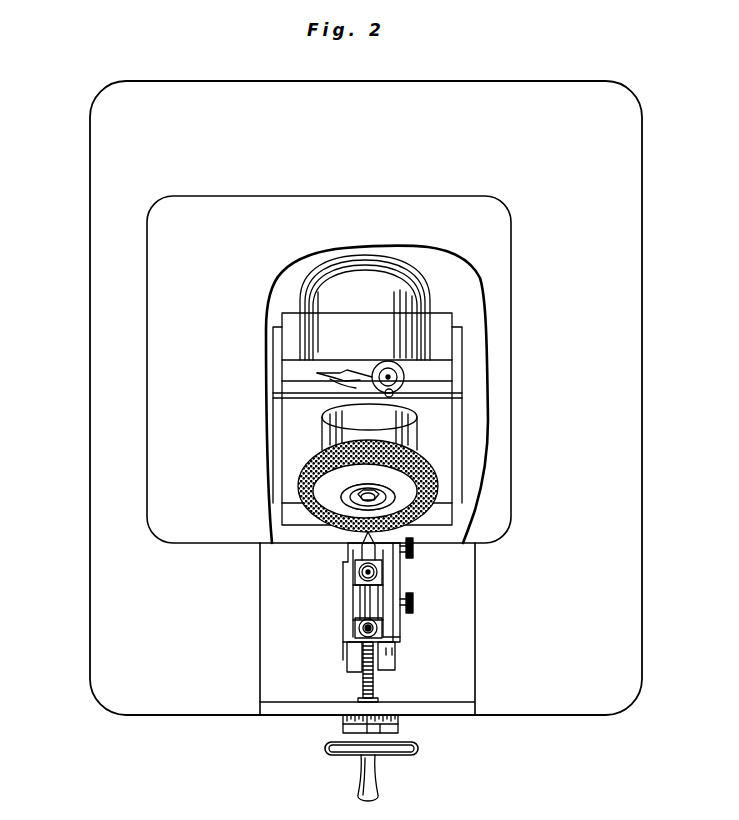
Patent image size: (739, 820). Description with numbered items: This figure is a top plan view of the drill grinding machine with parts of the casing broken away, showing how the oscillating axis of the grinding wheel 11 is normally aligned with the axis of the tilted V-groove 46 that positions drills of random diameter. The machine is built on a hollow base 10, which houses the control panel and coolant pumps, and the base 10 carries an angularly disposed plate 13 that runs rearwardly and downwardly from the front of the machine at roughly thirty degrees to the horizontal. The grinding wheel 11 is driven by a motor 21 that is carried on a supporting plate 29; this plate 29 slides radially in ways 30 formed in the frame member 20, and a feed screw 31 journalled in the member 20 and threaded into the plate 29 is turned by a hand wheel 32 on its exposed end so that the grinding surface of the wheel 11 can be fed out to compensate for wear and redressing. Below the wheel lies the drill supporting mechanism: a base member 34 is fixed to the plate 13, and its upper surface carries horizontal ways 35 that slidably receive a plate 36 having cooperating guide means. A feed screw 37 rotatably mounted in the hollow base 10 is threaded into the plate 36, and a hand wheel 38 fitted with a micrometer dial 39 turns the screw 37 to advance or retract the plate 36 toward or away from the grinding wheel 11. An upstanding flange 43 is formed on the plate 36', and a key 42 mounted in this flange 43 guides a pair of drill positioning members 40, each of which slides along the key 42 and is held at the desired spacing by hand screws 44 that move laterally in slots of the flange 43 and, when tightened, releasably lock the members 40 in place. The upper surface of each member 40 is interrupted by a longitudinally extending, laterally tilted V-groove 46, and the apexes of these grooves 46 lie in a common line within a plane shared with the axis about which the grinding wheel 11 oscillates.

The hollow base 10 is at (88, 415).
The grinding wheel 11 is at (410, 468).
The angularly disposed plate 13 is at (459, 278).
The frame member 20 is at (292, 438).
The motor 21 is at (357, 278).
The supporting plate 29 is at (352, 369).
The ways 30 is at (345, 385).
The feed screw 31 is at (397, 376).
The hand wheel 32 is at (395, 392).
The base member 34 is at (347, 654).
The ways 35 is at (394, 659).
The plate 36 is at (355, 592).
The plate 36' is at (341, 607).
The feed screw 37 is at (373, 689).
The hand wheel 38 is at (377, 791).
The micrometer dial 39 is at (345, 729).
The drill positioning members 40 is at (380, 600).
The key 42 is at (383, 628).
The upstanding flange 43 is at (400, 637).
The hand screws 44 is at (413, 552).
The V-groove 46 is at (363, 600).